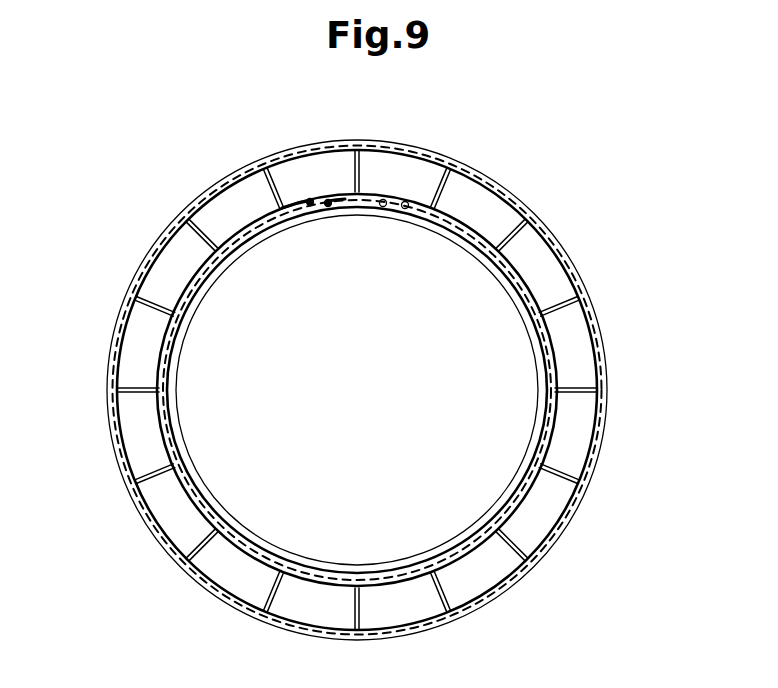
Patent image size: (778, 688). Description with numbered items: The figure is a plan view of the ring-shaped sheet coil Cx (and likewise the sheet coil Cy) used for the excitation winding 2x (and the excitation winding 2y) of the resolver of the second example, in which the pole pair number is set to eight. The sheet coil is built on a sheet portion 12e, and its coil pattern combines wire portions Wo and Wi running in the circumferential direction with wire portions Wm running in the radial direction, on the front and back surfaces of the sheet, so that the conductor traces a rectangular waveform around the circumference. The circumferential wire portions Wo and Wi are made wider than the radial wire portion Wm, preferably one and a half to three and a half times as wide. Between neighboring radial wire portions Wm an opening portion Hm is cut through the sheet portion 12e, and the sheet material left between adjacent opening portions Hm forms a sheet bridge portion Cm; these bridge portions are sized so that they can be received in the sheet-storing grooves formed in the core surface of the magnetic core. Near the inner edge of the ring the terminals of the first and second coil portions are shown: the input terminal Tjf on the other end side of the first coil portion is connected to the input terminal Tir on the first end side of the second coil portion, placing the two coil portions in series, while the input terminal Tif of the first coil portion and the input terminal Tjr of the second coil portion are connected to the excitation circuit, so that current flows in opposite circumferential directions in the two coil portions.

The excitation winding 2x is at (375, 393).
The excitation winding 2y is at (583, 203).
The sheet coil Cx is at (403, 379).
The sheet coil Cy is at (158, 208).
The opening portion Hm is at (537, 258).
The sheet bridge portion Cm is at (505, 207).
The outer circumferential wire portion Wo is at (112, 353).
The radial wire portion Wm is at (138, 395).
The inner circumferential wire portion Wi is at (177, 418).
The sheet portion 12e is at (145, 265).
The input terminal Tjf is at (310, 205).
The input terminal Tif is at (328, 205).
The input terminal Tir is at (383, 208).
The input terminal Tjr is at (408, 208).